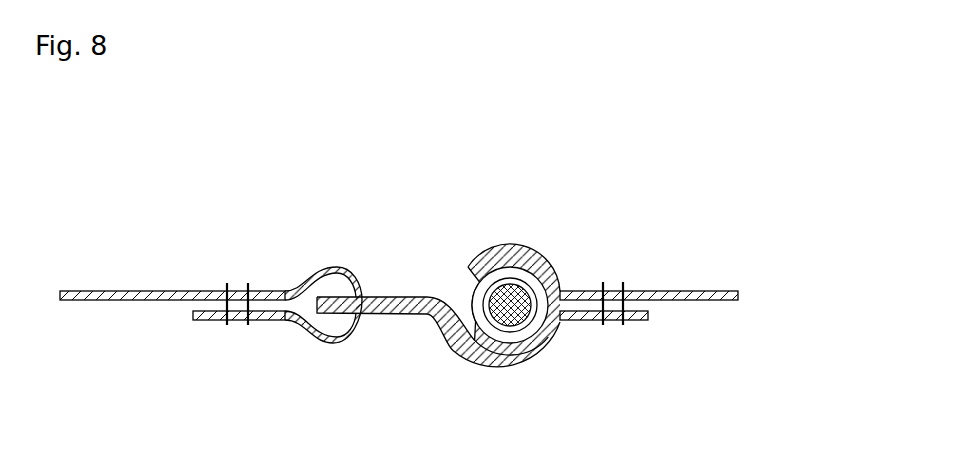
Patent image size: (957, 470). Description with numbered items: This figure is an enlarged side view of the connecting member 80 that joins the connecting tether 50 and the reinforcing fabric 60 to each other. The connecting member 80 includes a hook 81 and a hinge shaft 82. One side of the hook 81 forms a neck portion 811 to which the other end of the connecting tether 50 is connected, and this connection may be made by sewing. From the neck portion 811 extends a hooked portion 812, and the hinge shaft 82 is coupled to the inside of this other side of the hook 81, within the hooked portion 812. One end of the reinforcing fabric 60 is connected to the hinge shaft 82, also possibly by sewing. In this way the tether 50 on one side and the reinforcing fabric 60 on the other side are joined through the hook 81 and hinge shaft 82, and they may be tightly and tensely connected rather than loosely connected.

The connecting tether 50 is at (93, 291).
The reinforcing fabric 60 is at (715, 291).
The connecting member 80 is at (438, 198).
The hook 81 is at (439, 331).
The neck portion 811 is at (388, 297).
The hooked portion 812 is at (510, 245).
The hinge shaft 82 is at (527, 333).